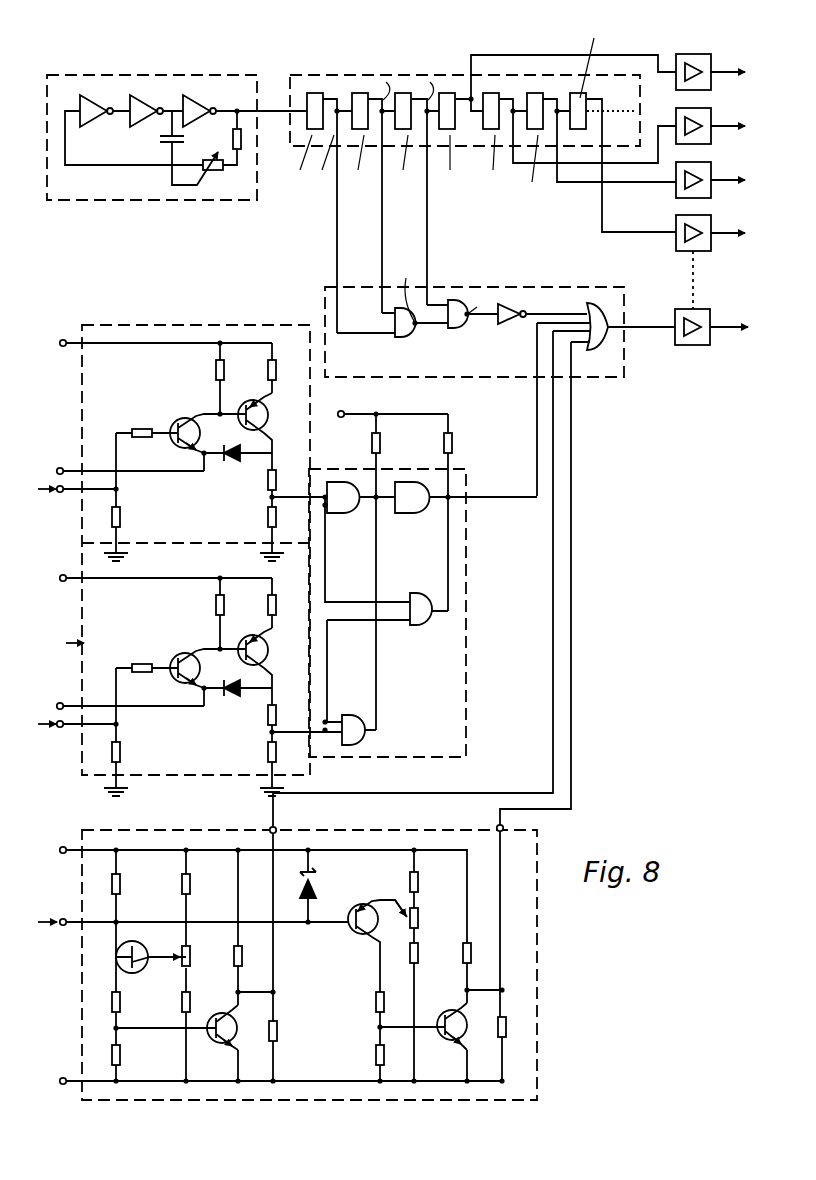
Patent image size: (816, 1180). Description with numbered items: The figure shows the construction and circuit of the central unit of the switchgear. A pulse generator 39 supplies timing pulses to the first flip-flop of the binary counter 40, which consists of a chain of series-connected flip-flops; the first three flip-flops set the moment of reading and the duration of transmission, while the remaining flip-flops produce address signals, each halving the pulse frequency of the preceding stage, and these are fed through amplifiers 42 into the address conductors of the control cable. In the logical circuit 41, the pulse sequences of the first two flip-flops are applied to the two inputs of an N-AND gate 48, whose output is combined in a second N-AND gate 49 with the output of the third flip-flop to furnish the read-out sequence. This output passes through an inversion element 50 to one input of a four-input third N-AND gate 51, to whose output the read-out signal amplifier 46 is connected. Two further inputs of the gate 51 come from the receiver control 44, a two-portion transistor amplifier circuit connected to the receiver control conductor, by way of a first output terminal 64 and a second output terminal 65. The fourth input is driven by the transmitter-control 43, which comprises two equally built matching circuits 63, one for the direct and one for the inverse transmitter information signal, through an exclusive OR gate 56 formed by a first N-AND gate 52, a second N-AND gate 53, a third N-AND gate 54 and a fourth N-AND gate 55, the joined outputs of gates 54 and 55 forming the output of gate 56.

The pulse generator 39 is at (195, 75).
The binary counter 40 is at (442, 75).
The logical circuit 41 is at (616, 290).
The amplifier 42 is at (700, 58).
The transmitter-control 43 is at (240, 326).
The receiver control 44 is at (362, 1100).
The read-out signal amplifier 46 is at (700, 346).
The N-AND gate 48 is at (408, 338).
The second N-AND gate 49 is at (458, 330).
The inversion element 50 is at (510, 326).
The third N-AND gate 51 is at (598, 346).
The first N-AND gate 52 is at (353, 514).
The second N-AND gate 53 is at (348, 715).
The third N-AND gate 54 is at (424, 627).
The fourth N-AND gate 55 is at (421, 514).
The exclusive OR gate 56 is at (462, 708).
The matching circuit 63 is at (84, 408).
The first output terminal 64 is at (286, 907).
The second output terminal 65 is at (498, 828).